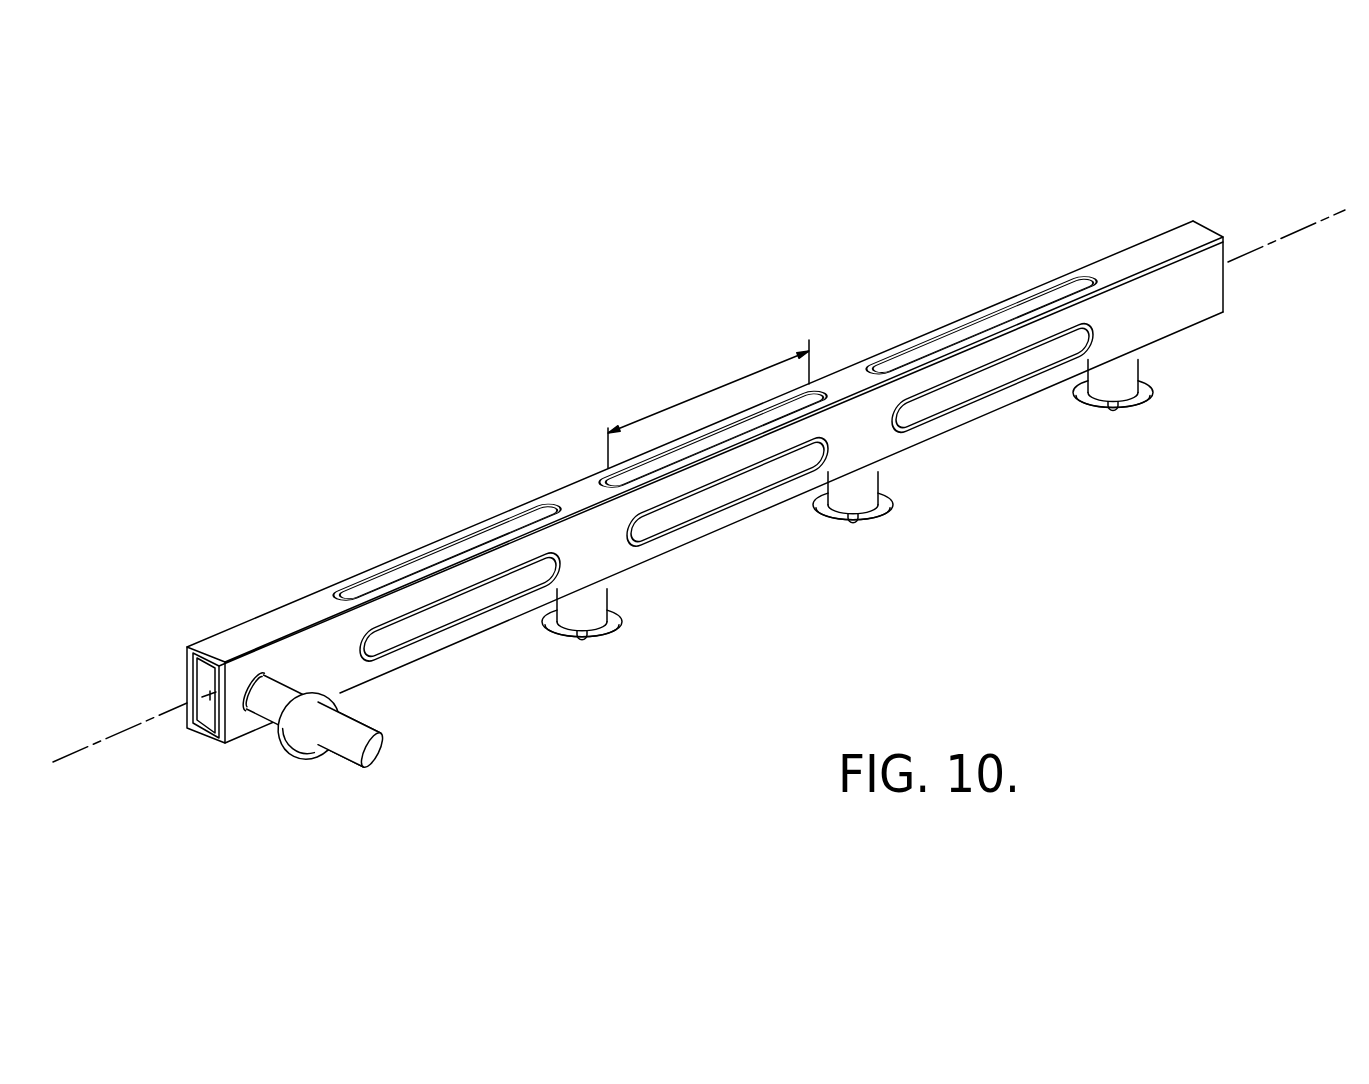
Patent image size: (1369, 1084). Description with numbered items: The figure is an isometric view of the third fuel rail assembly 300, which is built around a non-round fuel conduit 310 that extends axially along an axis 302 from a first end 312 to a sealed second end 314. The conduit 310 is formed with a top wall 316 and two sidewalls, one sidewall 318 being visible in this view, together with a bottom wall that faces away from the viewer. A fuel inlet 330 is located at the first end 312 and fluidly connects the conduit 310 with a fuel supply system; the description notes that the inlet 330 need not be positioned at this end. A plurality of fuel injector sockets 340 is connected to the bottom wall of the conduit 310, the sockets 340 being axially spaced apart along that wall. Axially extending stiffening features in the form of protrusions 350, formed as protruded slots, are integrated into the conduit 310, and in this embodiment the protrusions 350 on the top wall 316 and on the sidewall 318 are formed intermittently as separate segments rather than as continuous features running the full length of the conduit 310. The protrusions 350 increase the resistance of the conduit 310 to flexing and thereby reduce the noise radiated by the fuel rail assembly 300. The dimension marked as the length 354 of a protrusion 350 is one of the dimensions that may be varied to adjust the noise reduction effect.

The third fuel rail assembly 300 is at (705, 498).
The axis 302 is at (1283, 240).
The non-round fuel conduit 310 is at (705, 440).
The first end 312 is at (187, 672).
The sealed second end 314 is at (1203, 226).
The top wall 316 is at (213, 636).
The sidewall 318 is at (1213, 308).
The fuel inlet 330 is at (340, 745).
The fuel injector sockets 340 is at (593, 614).
The protrusions 350 is at (953, 330).
The length 354 is at (736, 381).